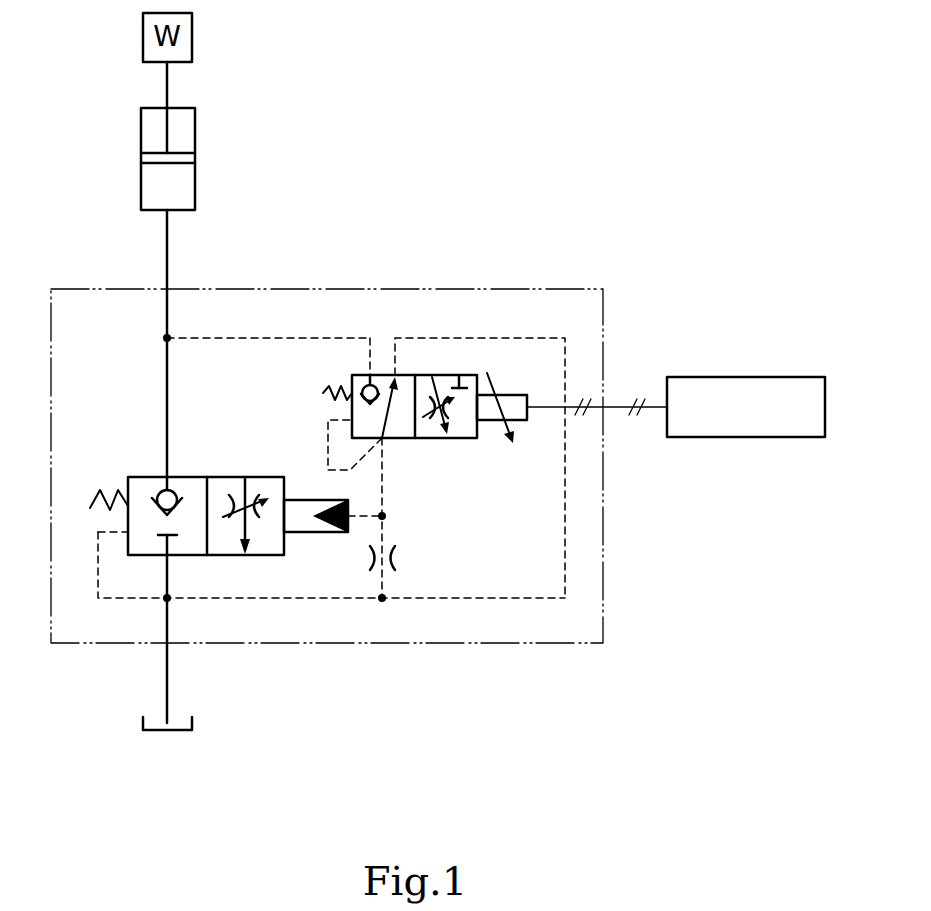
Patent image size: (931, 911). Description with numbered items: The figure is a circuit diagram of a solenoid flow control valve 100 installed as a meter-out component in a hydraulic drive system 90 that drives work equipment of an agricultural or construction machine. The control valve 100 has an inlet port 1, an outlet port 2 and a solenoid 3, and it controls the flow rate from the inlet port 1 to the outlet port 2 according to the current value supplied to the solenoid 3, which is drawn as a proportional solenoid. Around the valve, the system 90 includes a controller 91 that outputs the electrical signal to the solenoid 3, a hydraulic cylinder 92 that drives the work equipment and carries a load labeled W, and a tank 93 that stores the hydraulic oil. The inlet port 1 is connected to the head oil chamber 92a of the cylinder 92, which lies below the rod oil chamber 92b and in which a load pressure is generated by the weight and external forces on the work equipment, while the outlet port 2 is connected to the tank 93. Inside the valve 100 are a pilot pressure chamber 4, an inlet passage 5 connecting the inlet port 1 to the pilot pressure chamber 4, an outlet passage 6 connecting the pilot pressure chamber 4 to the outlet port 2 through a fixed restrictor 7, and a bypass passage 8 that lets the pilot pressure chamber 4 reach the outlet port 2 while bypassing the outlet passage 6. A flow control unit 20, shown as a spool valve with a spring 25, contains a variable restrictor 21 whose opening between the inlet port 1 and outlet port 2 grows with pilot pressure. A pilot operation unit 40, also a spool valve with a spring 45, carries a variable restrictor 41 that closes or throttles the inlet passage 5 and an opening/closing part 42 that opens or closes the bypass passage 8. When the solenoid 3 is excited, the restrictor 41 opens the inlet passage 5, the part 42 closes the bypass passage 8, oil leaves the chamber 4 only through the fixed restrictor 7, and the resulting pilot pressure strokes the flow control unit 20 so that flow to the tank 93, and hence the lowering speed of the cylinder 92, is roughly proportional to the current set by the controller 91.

The inlet port 1 is at (167, 290).
The outlet port 2 is at (167, 645).
The solenoid 3 is at (520, 423).
The pilot pressure chamber 4 is at (308, 532).
The inlet passage 5 is at (270, 338).
The outlet passage 6 is at (385, 588).
The fixed restrictor 7 is at (392, 556).
The bypass passage 8 is at (473, 338).
The flow control unit 20 is at (225, 474).
The variable restrictor 21 is at (237, 508).
The spring 25 is at (89, 507).
The pilot operation unit 40 is at (382, 375).
The variable restrictor 41 is at (434, 440).
The opening/closing part 42 is at (398, 392).
The spring 45 is at (323, 393).
The hydraulic drive system 90 is at (334, 480).
The controller 91 is at (753, 438).
The hydraulic cylinder 92 is at (162, 159).
The head oil chamber 92a is at (145, 188).
The rod oil chamber 92b is at (145, 133).
The tank 93 is at (193, 723).
The solenoid flow control valve 100 is at (581, 287).